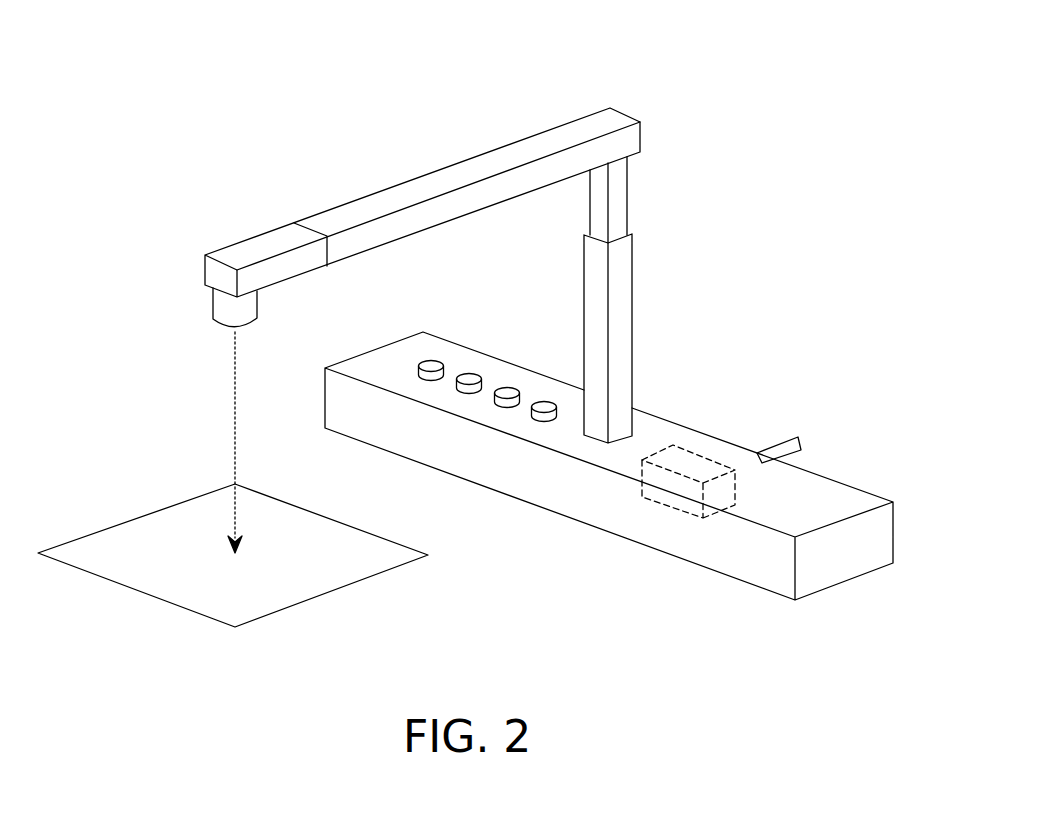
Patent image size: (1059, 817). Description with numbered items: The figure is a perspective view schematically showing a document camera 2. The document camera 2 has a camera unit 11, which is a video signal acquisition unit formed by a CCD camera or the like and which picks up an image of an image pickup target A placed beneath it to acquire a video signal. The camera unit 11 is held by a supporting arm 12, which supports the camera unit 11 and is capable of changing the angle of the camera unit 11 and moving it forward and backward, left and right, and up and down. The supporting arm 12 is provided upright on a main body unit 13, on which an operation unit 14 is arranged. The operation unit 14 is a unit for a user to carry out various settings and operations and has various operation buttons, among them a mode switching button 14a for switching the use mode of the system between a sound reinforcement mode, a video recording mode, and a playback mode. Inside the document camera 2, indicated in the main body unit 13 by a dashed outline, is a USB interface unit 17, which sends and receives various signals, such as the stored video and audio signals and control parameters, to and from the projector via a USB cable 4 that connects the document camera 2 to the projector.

The document camera 2 is at (700, 60).
The camera unit 11 is at (212, 305).
The supporting arm 12 is at (619, 117).
The main body unit 13 is at (653, 417).
The operation unit 14 is at (506, 353).
The mode switching button 14a is at (546, 400).
The USB interface unit 17 is at (729, 463).
The USB cable 4 is at (776, 447).
The image pickup target A is at (366, 532).